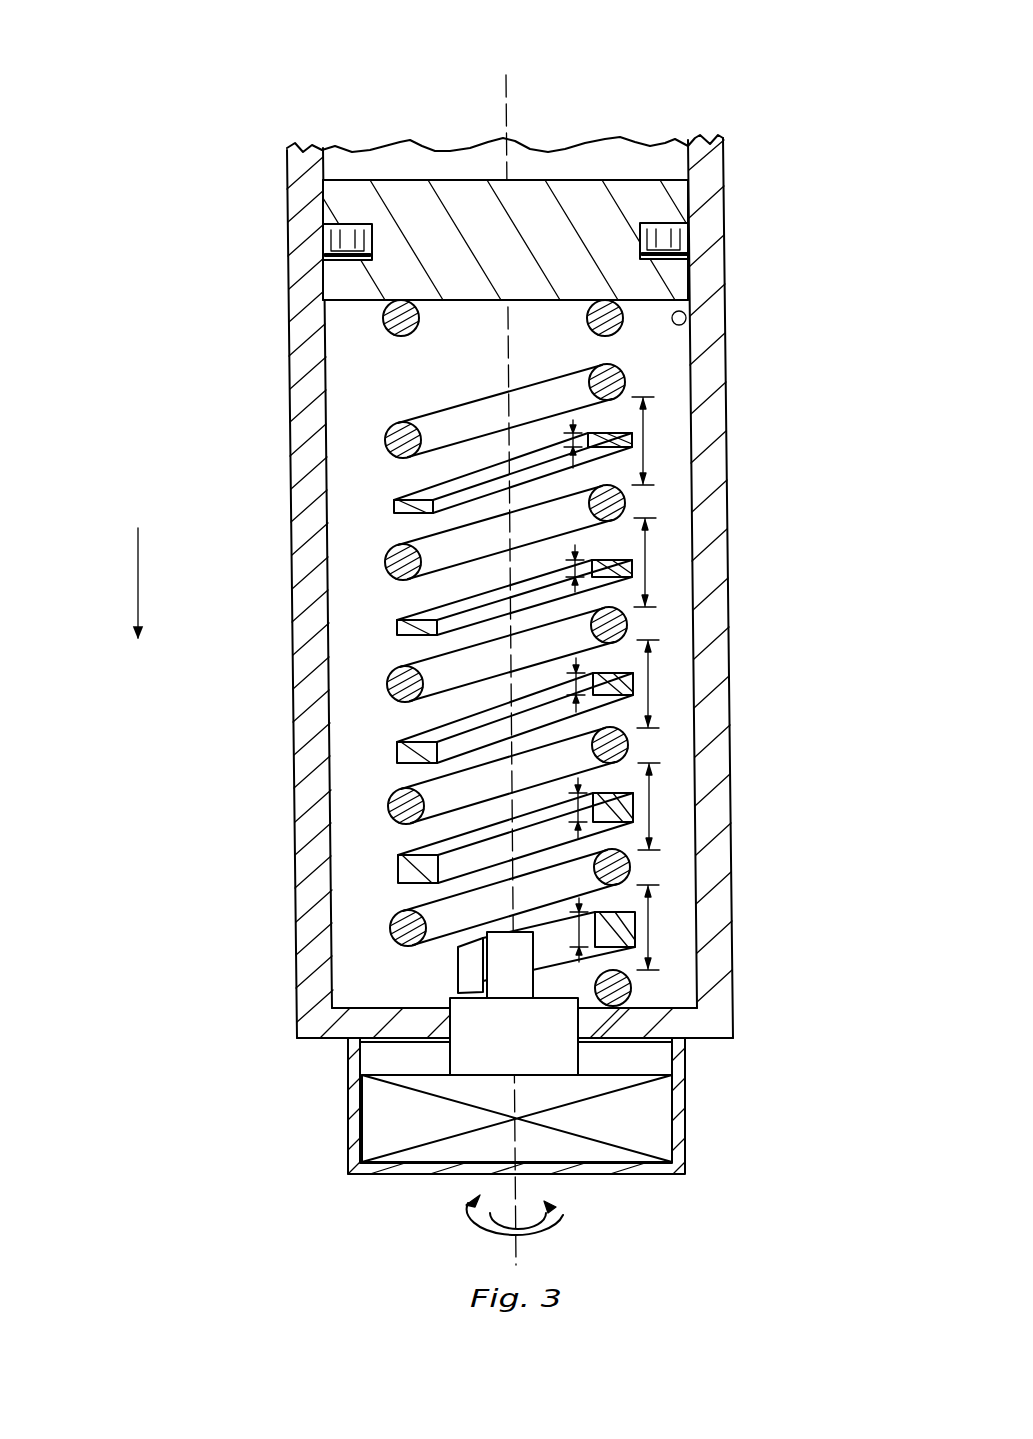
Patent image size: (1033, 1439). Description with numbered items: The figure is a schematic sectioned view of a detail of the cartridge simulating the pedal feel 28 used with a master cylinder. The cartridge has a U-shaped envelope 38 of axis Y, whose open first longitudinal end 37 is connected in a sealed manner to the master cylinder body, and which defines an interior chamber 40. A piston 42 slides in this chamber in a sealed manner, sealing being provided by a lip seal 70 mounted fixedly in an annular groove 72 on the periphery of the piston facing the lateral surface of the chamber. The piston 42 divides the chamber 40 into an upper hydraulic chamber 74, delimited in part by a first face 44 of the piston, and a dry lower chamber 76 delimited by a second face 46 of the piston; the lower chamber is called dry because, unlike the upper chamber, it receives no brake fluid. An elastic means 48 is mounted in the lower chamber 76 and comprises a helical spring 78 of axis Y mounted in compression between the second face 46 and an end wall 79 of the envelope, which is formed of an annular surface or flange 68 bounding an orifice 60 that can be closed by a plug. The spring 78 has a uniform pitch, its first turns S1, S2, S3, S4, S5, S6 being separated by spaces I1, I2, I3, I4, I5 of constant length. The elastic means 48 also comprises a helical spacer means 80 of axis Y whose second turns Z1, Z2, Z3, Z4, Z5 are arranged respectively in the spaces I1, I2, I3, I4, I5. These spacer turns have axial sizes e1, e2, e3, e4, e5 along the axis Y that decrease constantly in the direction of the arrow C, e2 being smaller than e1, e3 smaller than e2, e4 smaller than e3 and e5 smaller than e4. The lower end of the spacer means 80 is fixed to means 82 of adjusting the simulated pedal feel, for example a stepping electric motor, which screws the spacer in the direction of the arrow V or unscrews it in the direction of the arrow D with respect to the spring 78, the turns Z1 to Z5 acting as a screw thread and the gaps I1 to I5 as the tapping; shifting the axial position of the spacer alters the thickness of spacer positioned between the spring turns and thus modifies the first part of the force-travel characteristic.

The cartridge simulating the pedal feel 28 is at (236, 123).
The piston 42 is at (405, 208).
The first face of the piston 44 is at (447, 178).
The axis Y y is at (508, 103).
The upper hydraulic chamber 74 is at (618, 162).
The first longitudinal end 37 is at (712, 156).
The envelope 38 is at (297, 873).
The lip seal 70 is at (690, 234).
The annular groove 72 is at (694, 254).
The dry lower chamber 76 is at (690, 320).
The second face of the piston 46 is at (342, 306).
The interior chamber 40 is at (375, 368).
The first turn S6 is at (623, 378).
The first turn S5 is at (625, 503).
The first turn S4 is at (627, 625).
The first turn S3 is at (628, 745).
The first turn S2 is at (630, 867).
The first turn S1 is at (631, 988).
The second turn Z5 is at (615, 433).
The second turn Z4 is at (615, 560).
The second turn Z3 is at (616, 673).
The second turn Z2 is at (617, 793).
The second turn Z1 is at (618, 912).
The space I5 is at (645, 437).
The space I4 is at (647, 558).
The space I3 is at (650, 690).
The space I2 is at (651, 803).
The space I1 is at (650, 930).
The axial size e5 is at (570, 447).
The axial size e4 is at (573, 576).
The axial size e3 is at (574, 694).
The axial size e2 is at (577, 821).
The axial size e1 is at (578, 936).
The helical spring 78 is at (370, 563).
The elastic means 48 is at (348, 697).
The spacer means 80 is at (386, 757).
The end wall of the envelope 79 is at (288, 1029).
The orifice 60 is at (462, 1038).
The annular flange 68 is at (665, 1024).
The means of adjusting the simulated pedal feel 82 is at (705, 1161).
The arrow C is at (138, 577).
The arrow V is at (505, 1214).
The arrow D is at (526, 1206).